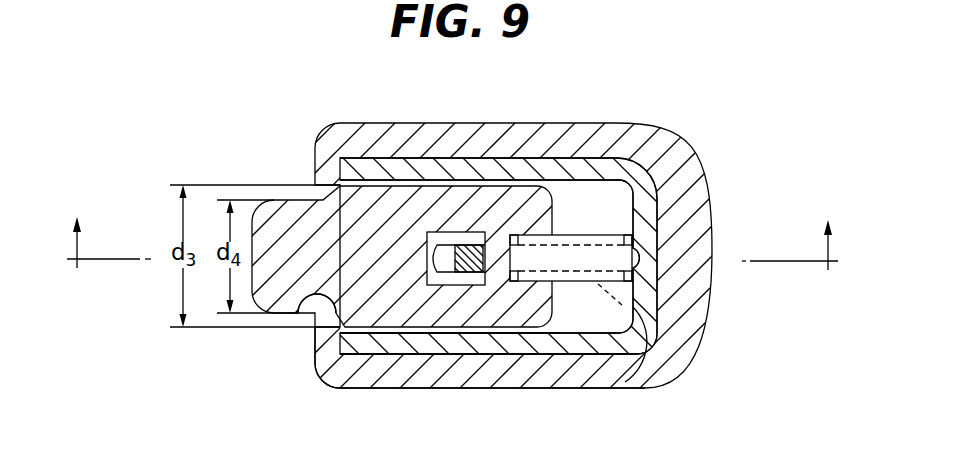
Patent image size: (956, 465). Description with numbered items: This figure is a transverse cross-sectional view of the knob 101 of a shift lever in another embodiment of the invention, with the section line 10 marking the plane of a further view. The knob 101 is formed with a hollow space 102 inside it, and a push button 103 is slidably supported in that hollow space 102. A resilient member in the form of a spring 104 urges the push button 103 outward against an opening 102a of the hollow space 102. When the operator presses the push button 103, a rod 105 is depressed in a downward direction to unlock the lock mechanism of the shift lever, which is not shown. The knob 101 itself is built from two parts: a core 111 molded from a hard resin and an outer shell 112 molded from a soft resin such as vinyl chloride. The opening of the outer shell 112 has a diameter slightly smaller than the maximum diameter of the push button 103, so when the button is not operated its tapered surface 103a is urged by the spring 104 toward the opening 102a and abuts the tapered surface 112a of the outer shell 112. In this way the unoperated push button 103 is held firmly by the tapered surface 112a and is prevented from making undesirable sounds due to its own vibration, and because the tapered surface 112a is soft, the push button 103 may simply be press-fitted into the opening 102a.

The section line 10- 10 is at (453, 226).
The knob 101 is at (607, 126).
The hollow space 102 is at (610, 203).
The opening 102a is at (363, 334).
The push button 103 is at (401, 205).
The tapered surface 103a is at (323, 311).
The spring 104 is at (665, 312).
The rod 105 is at (472, 246).
The core 111 is at (652, 353).
The outer shell 112 is at (529, 369).
The tapered surface 112a is at (315, 314).